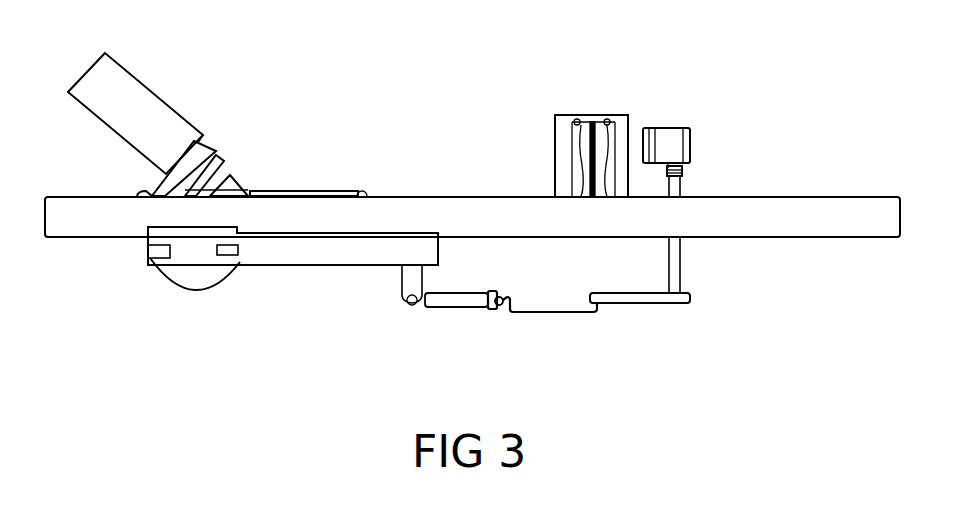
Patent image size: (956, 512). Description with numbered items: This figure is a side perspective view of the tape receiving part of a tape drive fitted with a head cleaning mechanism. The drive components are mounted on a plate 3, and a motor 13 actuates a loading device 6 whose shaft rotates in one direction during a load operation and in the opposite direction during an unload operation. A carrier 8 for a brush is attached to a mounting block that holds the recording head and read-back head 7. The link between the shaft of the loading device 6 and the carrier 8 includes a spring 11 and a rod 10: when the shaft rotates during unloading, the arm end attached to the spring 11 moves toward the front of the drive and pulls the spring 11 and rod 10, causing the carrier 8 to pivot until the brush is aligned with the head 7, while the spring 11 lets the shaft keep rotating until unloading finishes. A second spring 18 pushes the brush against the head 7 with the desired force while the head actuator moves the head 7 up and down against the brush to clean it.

The plate 3 is at (840, 197).
The loading device 6 is at (313, 267).
The recording head and read-back head 7 is at (565, 115).
The carrier 8 is at (658, 128).
The rod 10 is at (545, 313).
The spring 11 is at (472, 310).
The motor 13 is at (85, 73).
The second spring 18 is at (682, 173).